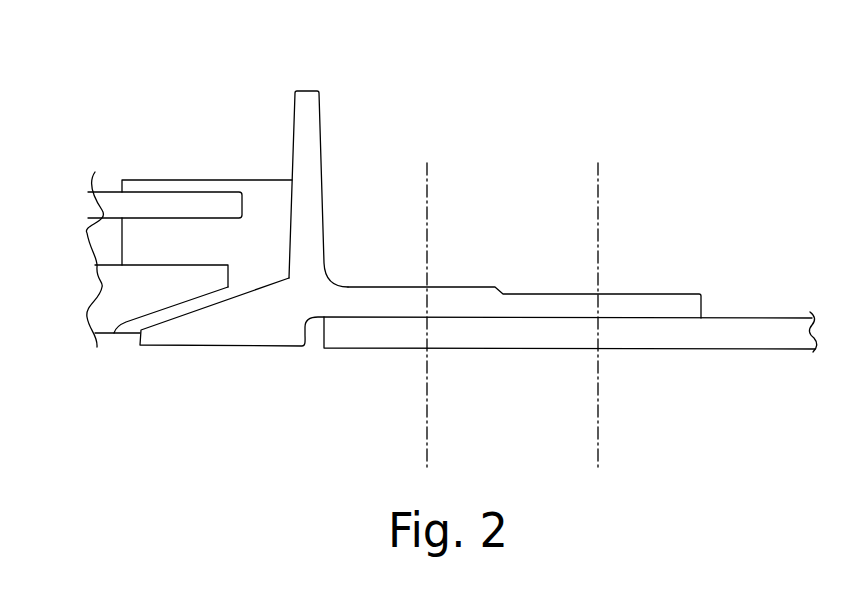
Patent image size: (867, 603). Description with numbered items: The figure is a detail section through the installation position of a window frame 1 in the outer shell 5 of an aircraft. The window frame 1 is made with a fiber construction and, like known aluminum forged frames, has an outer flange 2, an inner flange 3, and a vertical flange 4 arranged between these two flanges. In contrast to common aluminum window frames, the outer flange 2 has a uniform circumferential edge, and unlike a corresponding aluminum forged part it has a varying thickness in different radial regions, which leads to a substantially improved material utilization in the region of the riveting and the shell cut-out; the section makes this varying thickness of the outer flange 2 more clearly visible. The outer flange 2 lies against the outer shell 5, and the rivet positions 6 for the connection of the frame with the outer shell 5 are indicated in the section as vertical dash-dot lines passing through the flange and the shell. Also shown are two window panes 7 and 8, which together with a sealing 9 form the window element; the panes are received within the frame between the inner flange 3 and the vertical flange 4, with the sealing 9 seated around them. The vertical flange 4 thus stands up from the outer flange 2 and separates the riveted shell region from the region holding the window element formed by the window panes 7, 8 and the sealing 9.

The window frame 1 is at (460, 125).
The outer flange 2 is at (650, 294).
The inner flange 3 is at (234, 348).
The vertical flange 4 is at (320, 118).
The outer shell 5 is at (613, 337).
The rivet positions 6 is at (432, 270).
The window pane 7 is at (110, 190).
The window pane 8 is at (165, 295).
The sealing 9 is at (262, 195).